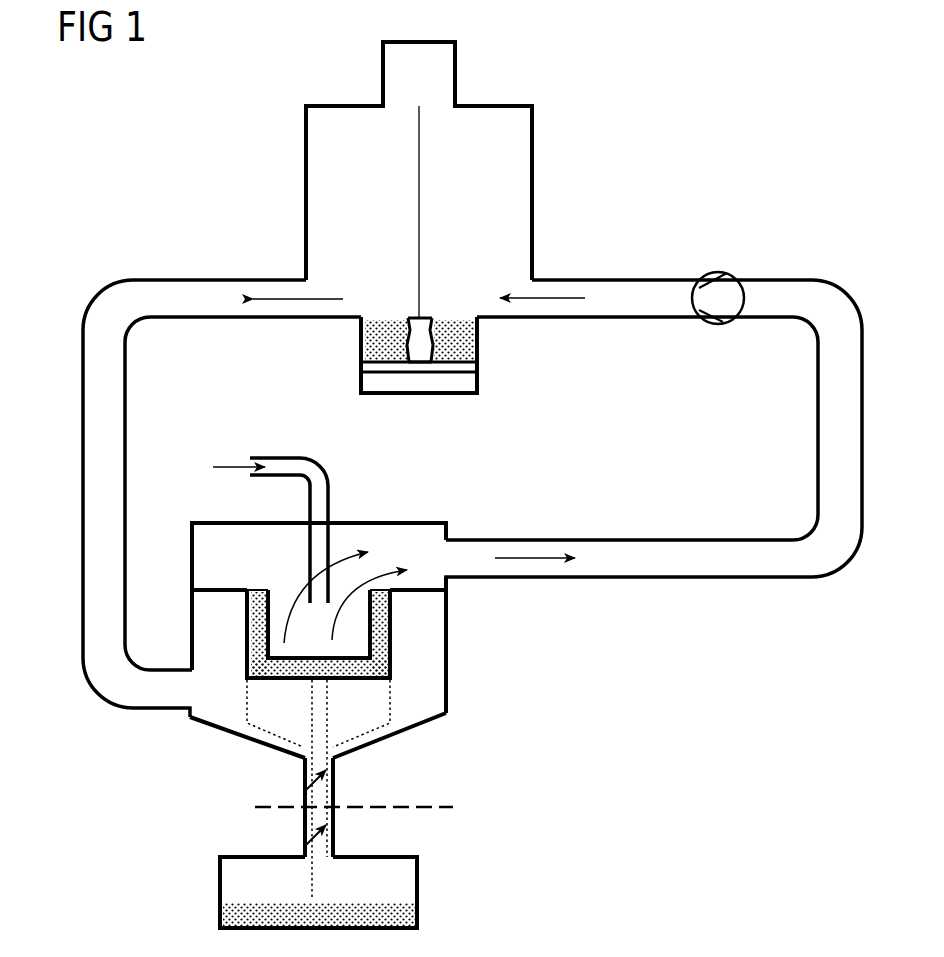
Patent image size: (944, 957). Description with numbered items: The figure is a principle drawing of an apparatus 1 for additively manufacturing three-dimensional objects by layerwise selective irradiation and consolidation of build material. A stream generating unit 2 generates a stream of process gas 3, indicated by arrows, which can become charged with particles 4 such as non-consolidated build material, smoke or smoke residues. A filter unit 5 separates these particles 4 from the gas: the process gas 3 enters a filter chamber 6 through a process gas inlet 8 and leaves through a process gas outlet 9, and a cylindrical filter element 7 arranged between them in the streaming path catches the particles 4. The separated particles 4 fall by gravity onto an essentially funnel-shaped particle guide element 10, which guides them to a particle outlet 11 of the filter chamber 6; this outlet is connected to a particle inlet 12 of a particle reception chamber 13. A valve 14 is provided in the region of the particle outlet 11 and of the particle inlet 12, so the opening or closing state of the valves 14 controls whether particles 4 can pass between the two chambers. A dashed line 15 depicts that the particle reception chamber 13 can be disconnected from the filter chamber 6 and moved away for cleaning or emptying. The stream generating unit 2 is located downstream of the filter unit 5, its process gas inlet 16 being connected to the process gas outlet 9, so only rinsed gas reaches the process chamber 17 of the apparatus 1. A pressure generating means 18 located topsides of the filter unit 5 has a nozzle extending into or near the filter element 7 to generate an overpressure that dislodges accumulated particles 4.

The apparatus 1 is at (172, 178).
The stream generating unit 2 is at (708, 274).
The process gas 3 is at (573, 292).
The particles 4 is at (345, 298).
The filter unit 5 is at (188, 503).
The filter chamber 6 is at (414, 682).
The filter element 7 is at (392, 615).
The process gas inlet 8 is at (180, 688).
The process gas outlet 9 is at (458, 552).
The particle guide element 10 is at (233, 728).
The particle outlet 11 is at (335, 767).
The particle inlet 12 is at (335, 836).
The particle reception chamber 13 is at (432, 907).
The valve 14 is at (310, 783).
The dashed line 15 is at (446, 806).
The process gas inlet 16 is at (758, 296).
The process chamber 17 is at (520, 90).
The pressure generating means 18 is at (266, 468).